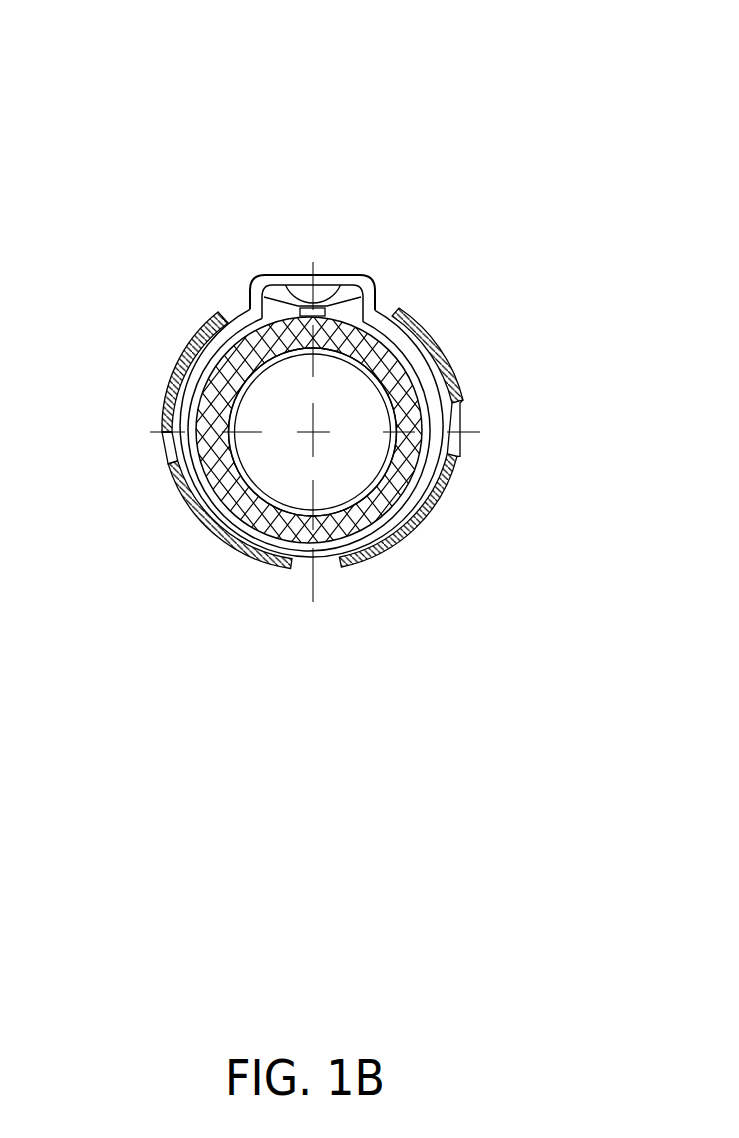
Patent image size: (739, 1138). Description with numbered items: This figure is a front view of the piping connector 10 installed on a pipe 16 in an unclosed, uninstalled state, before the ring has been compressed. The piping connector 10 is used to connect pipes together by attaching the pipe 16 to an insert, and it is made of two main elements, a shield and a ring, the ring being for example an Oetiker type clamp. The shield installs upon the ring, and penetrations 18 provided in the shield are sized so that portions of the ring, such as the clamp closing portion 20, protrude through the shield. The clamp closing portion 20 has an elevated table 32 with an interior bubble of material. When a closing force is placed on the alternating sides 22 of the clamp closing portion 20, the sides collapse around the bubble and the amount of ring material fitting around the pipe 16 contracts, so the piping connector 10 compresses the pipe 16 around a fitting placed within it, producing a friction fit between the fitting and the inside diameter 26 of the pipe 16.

The piping connector 10 is at (539, 115).
The pipe 16 is at (313, 545).
The penetrations 18 is at (460, 413).
The clamp closing portion 20 is at (308, 273).
The alternating sides 22 is at (250, 293).
The inside diameter 26 is at (313, 432).
The elevated table 32 is at (355, 273).